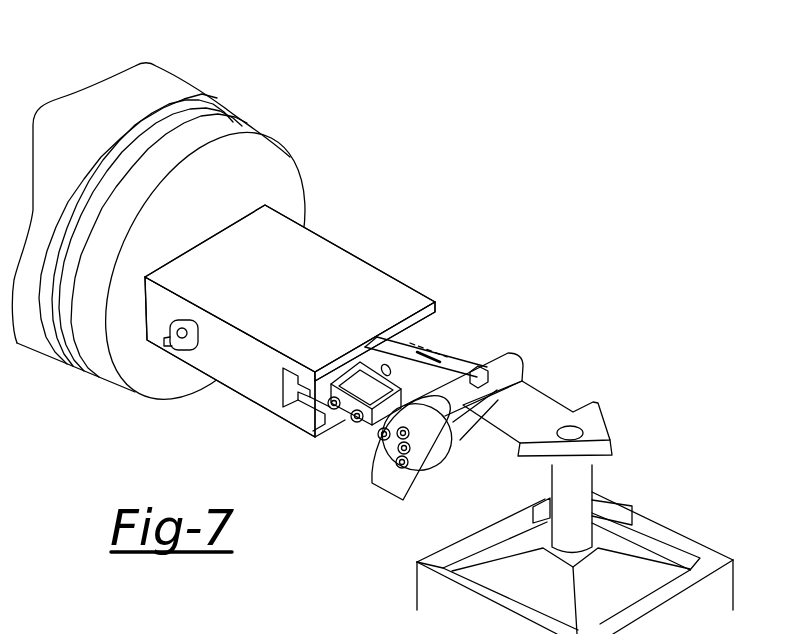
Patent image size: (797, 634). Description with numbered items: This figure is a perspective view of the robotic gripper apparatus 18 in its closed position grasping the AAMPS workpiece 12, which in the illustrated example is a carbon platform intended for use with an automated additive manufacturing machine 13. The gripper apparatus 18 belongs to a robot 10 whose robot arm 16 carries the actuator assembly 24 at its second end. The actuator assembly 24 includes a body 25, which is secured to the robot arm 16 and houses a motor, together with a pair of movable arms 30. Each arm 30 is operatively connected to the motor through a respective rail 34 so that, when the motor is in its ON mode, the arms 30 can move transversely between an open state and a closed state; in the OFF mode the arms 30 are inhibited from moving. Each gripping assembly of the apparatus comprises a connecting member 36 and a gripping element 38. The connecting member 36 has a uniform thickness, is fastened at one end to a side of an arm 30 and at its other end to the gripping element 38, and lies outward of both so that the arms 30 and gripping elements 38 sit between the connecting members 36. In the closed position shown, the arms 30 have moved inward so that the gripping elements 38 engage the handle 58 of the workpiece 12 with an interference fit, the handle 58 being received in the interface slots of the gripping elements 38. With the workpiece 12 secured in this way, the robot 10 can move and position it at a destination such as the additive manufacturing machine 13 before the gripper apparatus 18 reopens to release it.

The robot 10 is at (332, 116).
The AAMPS workpiece 12 is at (630, 543).
The automated additive manufacturing machine 13 is at (73, 616).
The robot arm 16 is at (135, 100).
The robotic gripper apparatus 18 is at (521, 335).
The actuator assembly 24 is at (312, 243).
The body 25 is at (388, 287).
The arm 30 is at (397, 320).
The rail 34 is at (287, 392).
The connecting member 36 is at (373, 424).
The gripping element 38 is at (417, 496).
The handle 58 is at (555, 412).